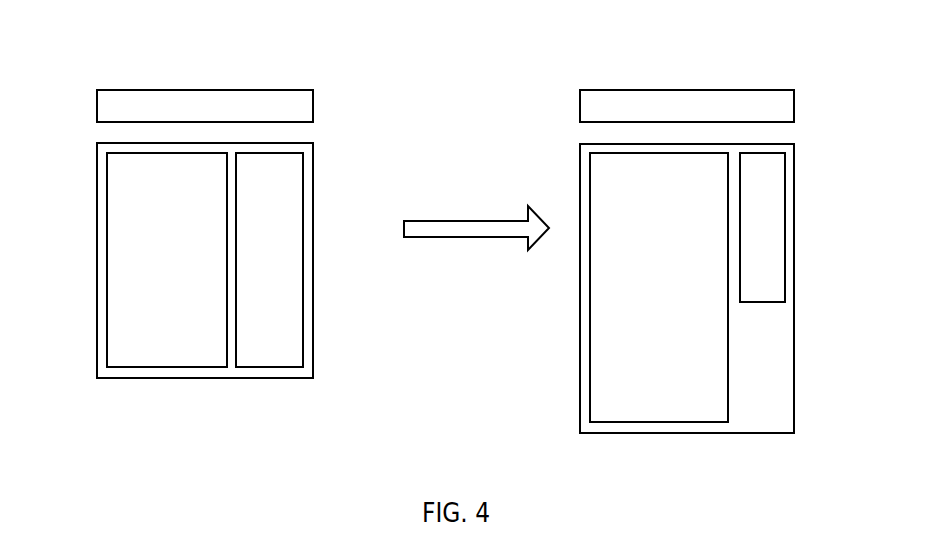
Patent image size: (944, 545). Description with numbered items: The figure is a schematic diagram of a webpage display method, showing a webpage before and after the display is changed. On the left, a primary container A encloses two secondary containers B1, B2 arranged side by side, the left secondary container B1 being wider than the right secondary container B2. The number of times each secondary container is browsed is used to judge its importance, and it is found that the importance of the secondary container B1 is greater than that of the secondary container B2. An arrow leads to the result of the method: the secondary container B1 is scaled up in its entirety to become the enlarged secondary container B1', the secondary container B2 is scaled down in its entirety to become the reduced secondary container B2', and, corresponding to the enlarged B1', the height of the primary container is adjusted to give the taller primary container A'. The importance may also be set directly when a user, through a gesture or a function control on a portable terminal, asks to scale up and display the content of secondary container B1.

The primary container A is at (238, 238).
The secondary container B1 is at (130, 259).
The secondary container B2 is at (306, 260).
The primary container after adjustment A' is at (723, 269).
The scaled-up secondary container B1' is at (611, 281).
The scaled-down secondary container B2' is at (801, 227).